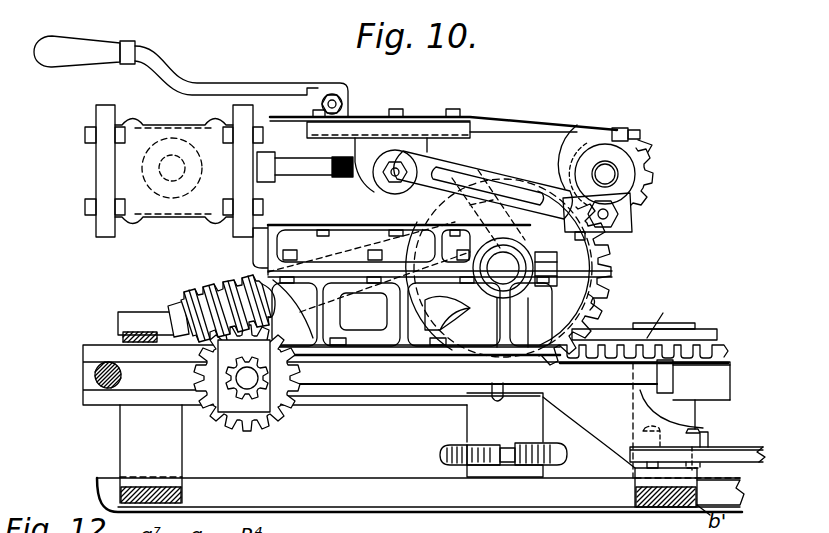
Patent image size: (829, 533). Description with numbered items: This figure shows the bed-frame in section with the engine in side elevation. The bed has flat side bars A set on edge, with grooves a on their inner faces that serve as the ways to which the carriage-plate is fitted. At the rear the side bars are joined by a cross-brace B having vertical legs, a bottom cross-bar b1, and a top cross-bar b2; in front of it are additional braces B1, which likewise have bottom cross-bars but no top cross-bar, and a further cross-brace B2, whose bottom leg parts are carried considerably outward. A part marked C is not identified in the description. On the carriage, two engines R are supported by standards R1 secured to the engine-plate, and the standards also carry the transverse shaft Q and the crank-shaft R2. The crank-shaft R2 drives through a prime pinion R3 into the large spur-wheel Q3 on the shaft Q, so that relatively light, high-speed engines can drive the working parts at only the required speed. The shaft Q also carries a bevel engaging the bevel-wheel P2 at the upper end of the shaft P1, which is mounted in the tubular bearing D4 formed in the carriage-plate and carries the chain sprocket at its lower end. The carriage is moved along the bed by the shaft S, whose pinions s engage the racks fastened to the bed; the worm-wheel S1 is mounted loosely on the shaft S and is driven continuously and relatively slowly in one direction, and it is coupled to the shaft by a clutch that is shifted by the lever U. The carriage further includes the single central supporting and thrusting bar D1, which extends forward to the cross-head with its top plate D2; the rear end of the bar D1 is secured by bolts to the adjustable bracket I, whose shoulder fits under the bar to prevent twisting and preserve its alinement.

The lever U is at (191, 76).
The engines R is at (219, 164).
The standards R1 is at (442, 210).
The crank-shaft R2 is at (609, 174).
The prime pinion R3 is at (607, 214).
The shaft Q is at (513, 269).
The spur-wheel Q3 is at (592, 296).
The shaft P1 is at (608, 347).
The bevel-wheel P2 is at (595, 322).
The cross-brace B2 is at (695, 328).
The side bars A is at (391, 373).
The grooves a is at (128, 375).
The top cross-bar b2 is at (122, 334).
The shaft S is at (292, 400).
The pinions s is at (288, 412).
The worm-wheel S1 is at (254, 384).
The braces B1 is at (135, 454).
The bottom cross-bar b1 is at (182, 488).
The base plate C is at (419, 495).
The cross-brace B is at (635, 469).
The tubular bearing D4 is at (468, 425).
The top plate D2 is at (722, 438).
The central bar D1 is at (748, 462).
The adjustable bracket I is at (663, 425).